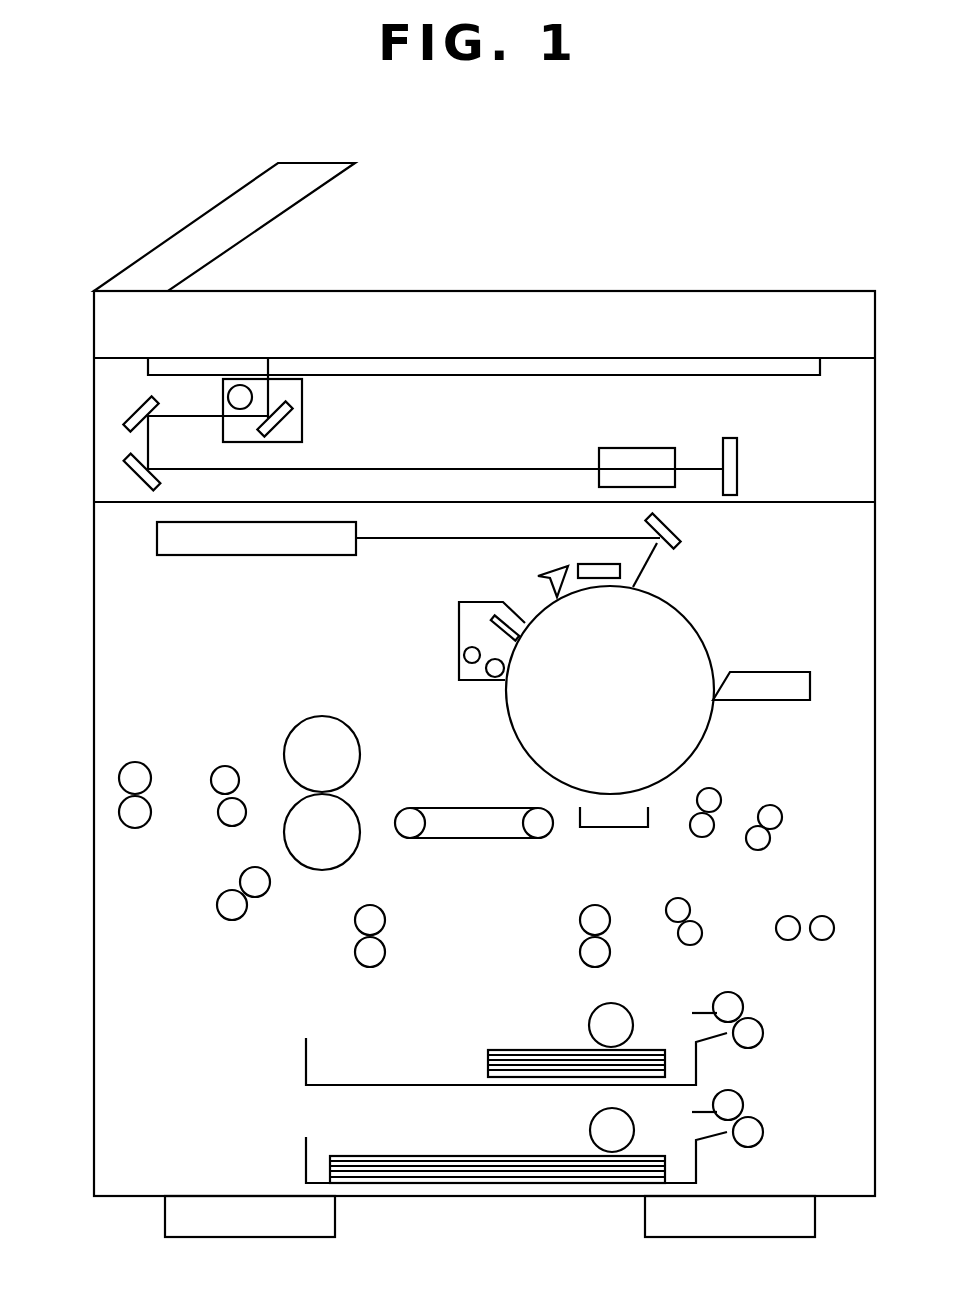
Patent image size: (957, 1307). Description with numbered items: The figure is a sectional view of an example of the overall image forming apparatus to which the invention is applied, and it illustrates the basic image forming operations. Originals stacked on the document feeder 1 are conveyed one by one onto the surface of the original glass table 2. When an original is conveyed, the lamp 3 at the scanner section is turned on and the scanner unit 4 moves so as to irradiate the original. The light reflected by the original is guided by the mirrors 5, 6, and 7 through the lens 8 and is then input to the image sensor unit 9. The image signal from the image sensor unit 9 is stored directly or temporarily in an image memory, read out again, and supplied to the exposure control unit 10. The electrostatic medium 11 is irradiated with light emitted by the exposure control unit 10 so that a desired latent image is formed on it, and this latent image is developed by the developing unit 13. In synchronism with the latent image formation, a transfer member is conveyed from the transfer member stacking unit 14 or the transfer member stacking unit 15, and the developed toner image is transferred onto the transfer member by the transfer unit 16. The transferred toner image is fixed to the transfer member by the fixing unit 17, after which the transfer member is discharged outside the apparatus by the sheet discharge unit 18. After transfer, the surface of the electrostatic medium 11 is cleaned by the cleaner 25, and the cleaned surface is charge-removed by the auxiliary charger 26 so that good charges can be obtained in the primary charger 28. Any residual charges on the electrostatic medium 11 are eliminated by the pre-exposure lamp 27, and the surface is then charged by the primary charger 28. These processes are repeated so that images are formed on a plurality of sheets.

The document feeder 1 is at (227, 200).
The original glass table 2 is at (682, 365).
The lamp 3 is at (256, 384).
The scanner unit 4 is at (302, 391).
The mirror 5 is at (290, 423).
The mirror 6 is at (135, 410).
The mirror 7 is at (135, 478).
The lens 8 is at (618, 447).
The image sensor unit 9 is at (738, 450).
The exposure control unit 10 is at (157, 545).
The electrostatic medium 11 is at (707, 648).
The developing unit 13 is at (787, 672).
The transfer member stacking unit 14 is at (306, 1065).
The transfer member stacking unit 15 is at (306, 1162).
The transfer unit 16 is at (612, 817).
The fixing unit 17 is at (360, 810).
The sheet discharge unit 18 is at (122, 787).
The cleaner 25 is at (462, 628).
The auxiliary charger 26 is at (557, 596).
The pre-exposure lamp 27 is at (573, 567).
The primary charger 28 is at (640, 568).